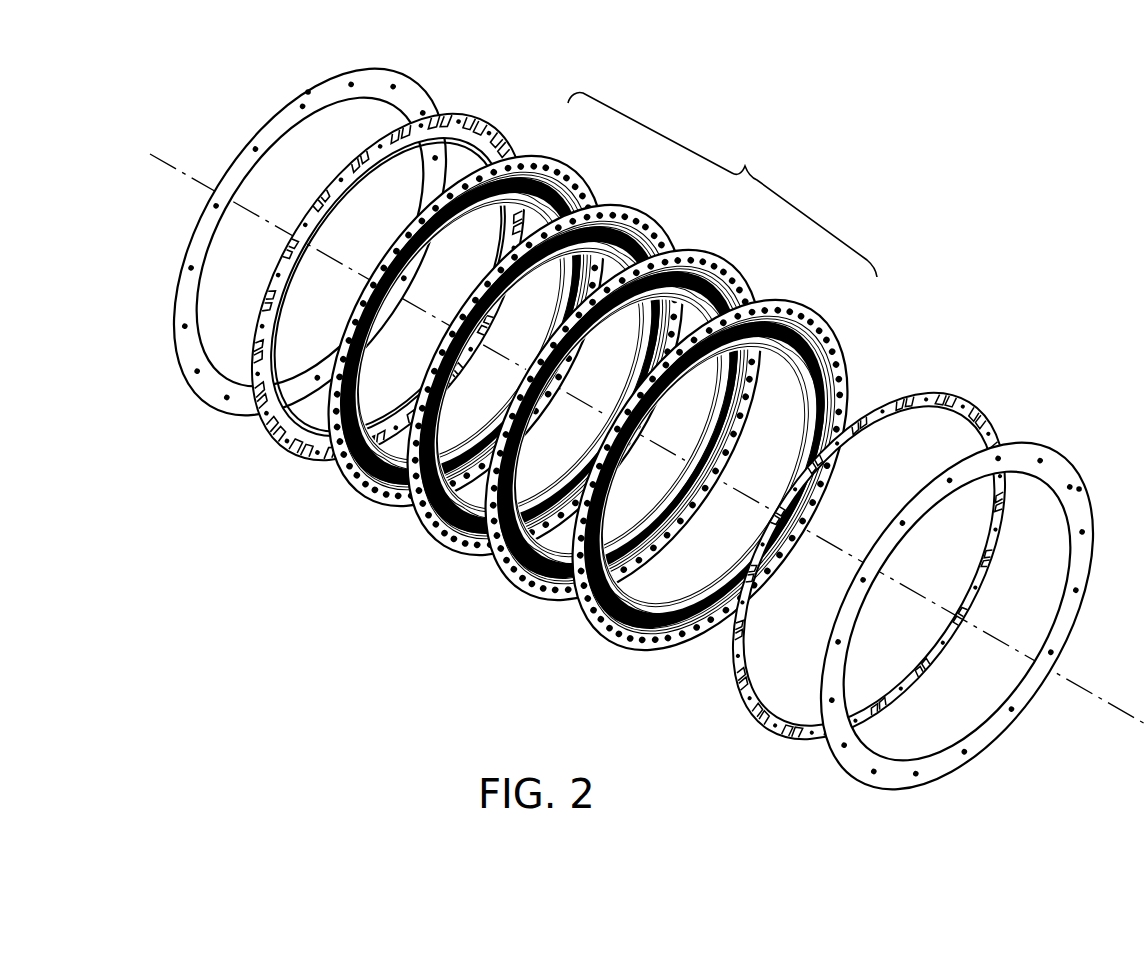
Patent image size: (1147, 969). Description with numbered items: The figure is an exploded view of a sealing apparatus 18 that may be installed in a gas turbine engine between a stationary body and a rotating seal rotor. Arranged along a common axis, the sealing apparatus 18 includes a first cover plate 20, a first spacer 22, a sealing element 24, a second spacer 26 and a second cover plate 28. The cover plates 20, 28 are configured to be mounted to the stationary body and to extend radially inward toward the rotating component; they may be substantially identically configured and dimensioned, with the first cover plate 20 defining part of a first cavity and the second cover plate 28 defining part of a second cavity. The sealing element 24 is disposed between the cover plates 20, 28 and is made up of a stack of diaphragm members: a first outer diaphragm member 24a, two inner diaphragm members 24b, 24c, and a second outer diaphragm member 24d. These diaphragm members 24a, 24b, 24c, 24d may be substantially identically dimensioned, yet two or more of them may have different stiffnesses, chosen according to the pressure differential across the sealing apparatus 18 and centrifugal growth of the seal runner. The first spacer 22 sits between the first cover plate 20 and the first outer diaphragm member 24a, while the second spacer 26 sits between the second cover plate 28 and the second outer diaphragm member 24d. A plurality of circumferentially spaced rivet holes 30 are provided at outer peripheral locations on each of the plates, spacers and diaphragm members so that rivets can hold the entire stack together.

The sealing apparatus 18 is at (942, 158).
The first cover plate 20 is at (1063, 453).
The first spacer 22 is at (968, 402).
The sealing element 24 is at (722, 184).
The first outer diaphragm member 24a is at (777, 303).
The inner diaphragm member 24b is at (697, 256).
The inner diaphragm member 24c is at (622, 212).
The second outer diaphragm member 24d is at (556, 167).
The second spacer 26 is at (477, 113).
The second cover plate 28 is at (399, 68).
The rivet holes 30 is at (307, 88).